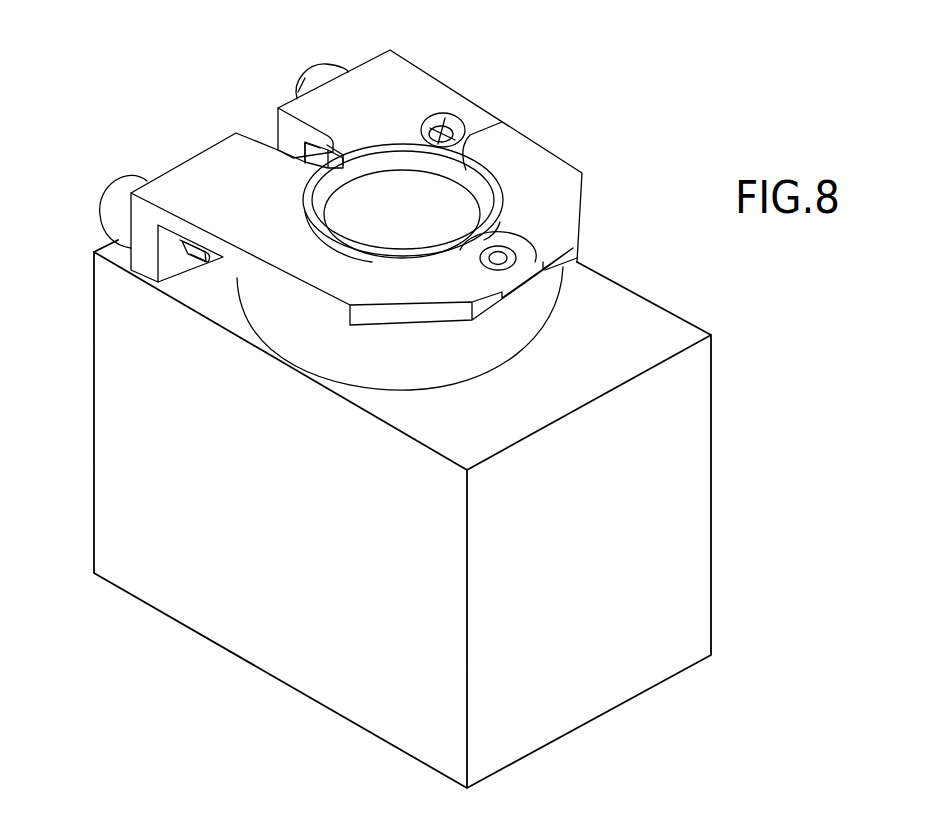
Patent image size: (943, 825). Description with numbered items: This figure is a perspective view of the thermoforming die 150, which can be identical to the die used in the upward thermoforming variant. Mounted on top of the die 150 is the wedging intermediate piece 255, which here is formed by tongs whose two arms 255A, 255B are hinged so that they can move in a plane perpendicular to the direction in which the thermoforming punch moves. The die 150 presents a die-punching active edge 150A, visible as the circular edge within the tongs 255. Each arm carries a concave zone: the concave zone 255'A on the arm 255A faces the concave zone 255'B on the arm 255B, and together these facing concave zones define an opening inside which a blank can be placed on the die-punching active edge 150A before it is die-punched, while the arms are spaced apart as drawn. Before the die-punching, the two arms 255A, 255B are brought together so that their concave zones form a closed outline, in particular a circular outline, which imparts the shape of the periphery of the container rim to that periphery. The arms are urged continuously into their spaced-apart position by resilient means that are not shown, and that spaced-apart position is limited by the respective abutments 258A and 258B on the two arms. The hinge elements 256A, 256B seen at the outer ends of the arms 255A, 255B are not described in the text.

The die 150 is at (688, 511).
The die-punching active edge 150A is at (401, 163).
The wedging intermediate piece 255 is at (433, 98).
The arm 255A is at (550, 177).
The arm 255B is at (312, 288).
The concave zone 255'A is at (535, 130).
The concave zone 255'B is at (266, 171).
The pivot pin of rear block 256A is at (322, 80).
The pivot pin of front block 256B is at (112, 197).
The abutment 258A is at (446, 121).
The abutment 258B is at (240, 222).